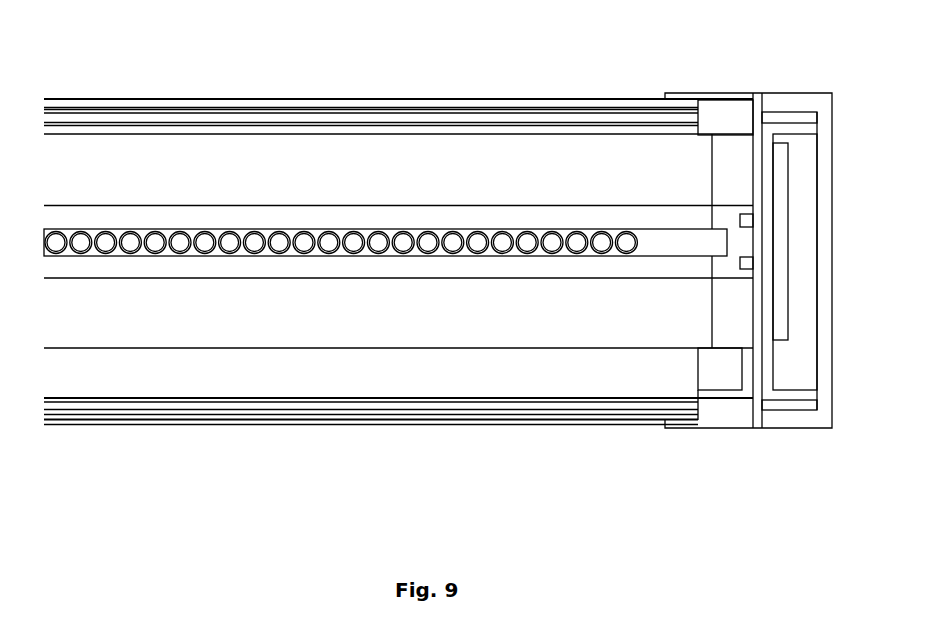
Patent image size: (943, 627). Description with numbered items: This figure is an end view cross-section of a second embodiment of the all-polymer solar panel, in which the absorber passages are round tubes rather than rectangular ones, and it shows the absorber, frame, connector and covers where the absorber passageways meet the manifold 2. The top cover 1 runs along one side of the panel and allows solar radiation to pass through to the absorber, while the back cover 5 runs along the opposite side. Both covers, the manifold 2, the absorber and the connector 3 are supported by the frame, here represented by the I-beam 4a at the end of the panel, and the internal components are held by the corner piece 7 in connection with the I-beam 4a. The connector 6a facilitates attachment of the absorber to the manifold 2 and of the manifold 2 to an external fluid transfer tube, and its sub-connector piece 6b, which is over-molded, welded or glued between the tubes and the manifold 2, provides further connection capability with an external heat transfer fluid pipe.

The top cover 1 is at (297, 110).
The manifold 2 is at (507, 322).
The connector 3 is at (180, 256).
The I-beam 4a is at (751, 429).
The back cover 5 is at (326, 427).
The connector 6a is at (690, 217).
The sub-connector piece 6b is at (349, 228).
The corner piece 7 is at (818, 420).